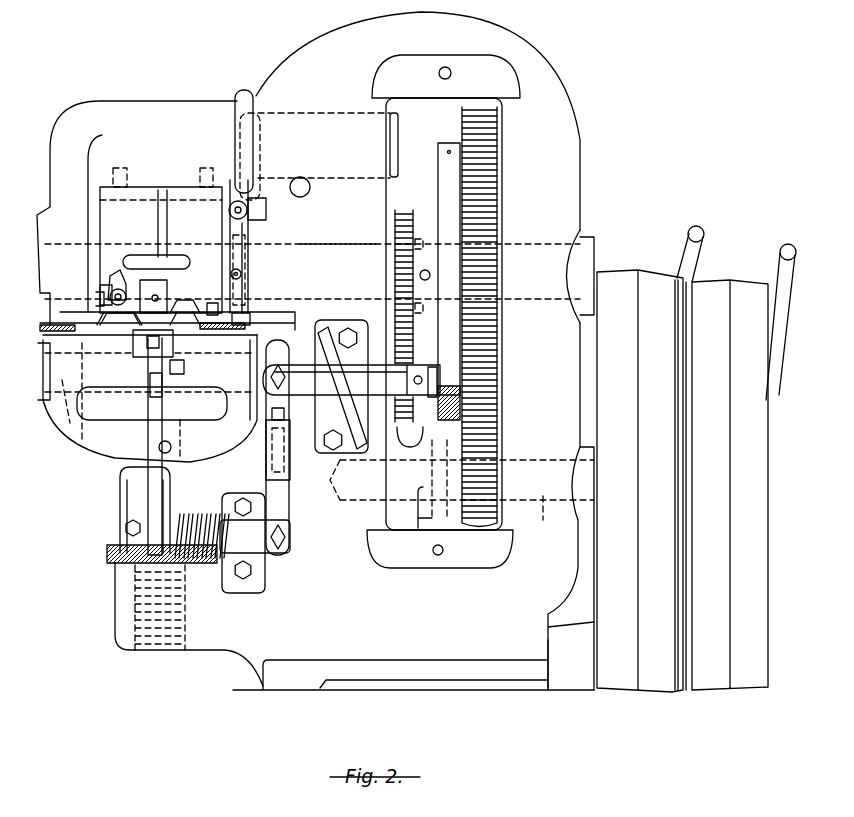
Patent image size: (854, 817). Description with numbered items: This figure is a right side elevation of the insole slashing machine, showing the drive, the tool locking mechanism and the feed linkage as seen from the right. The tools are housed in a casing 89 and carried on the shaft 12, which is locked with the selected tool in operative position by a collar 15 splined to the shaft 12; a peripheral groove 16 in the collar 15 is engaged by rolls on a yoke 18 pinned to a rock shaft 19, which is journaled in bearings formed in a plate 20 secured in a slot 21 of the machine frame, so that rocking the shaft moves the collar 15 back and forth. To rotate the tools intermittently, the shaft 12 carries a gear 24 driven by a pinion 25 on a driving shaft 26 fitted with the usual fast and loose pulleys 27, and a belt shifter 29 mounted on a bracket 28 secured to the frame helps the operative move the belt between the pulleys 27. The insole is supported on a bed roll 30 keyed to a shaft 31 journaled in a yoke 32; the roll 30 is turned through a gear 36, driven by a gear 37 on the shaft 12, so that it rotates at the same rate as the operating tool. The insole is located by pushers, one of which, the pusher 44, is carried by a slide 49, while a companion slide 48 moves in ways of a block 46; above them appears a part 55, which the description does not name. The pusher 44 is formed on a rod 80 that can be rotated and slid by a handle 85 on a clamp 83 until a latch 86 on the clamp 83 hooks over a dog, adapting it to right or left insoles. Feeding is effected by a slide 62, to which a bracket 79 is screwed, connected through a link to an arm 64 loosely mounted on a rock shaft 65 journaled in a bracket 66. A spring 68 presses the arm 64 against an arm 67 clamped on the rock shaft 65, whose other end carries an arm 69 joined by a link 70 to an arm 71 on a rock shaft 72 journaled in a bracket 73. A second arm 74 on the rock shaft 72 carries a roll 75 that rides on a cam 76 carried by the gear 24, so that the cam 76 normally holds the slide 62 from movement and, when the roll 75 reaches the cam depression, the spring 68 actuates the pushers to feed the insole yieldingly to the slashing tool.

The shaft 12 is at (333, 254).
The collar 15 is at (243, 293).
The peripheral groove 16 is at (237, 318).
The yoke 18 is at (250, 236).
The rock shaft 19 is at (247, 207).
The plate 20 is at (257, 214).
The slot 21 is at (285, 218).
The gear 24 is at (487, 193).
The pinion 25 is at (483, 465).
The driving shaft 26 is at (540, 491).
The fast and loose pulleys 27 is at (707, 692).
The bracket 28 is at (581, 618).
The belt shifter 29 is at (698, 265).
The bed roll 30 is at (102, 383).
The shaft 31 is at (77, 412).
The yoke 32 is at (153, 372).
The gear 36 is at (402, 352).
The gear 37 is at (402, 213).
The pusher 44 is at (66, 314).
The block 46 is at (203, 313).
The slide 48 is at (183, 313).
The slide 49 is at (121, 320).
The rod with cap 55 is at (175, 260).
The slide 62 is at (165, 350).
The arm 64 is at (152, 442).
The rock shaft 65 is at (263, 553).
The bracket 66 is at (256, 575).
The arm 67 is at (133, 497).
The spring 68 is at (172, 514).
The arm 69 is at (279, 508).
The link 70 is at (270, 468).
The arm 71 is at (277, 423).
The rock shaft 72 is at (330, 383).
The bracket 73 is at (333, 333).
The arm 74 is at (428, 383).
The roll 75 is at (455, 407).
The cam 76 is at (450, 150).
The bracket 79 is at (182, 372).
The rod 80 is at (130, 293).
The clamp 83 is at (110, 290).
The handle 85 is at (112, 273).
The latch 86 is at (97, 298).
The casing 89 is at (132, 213).